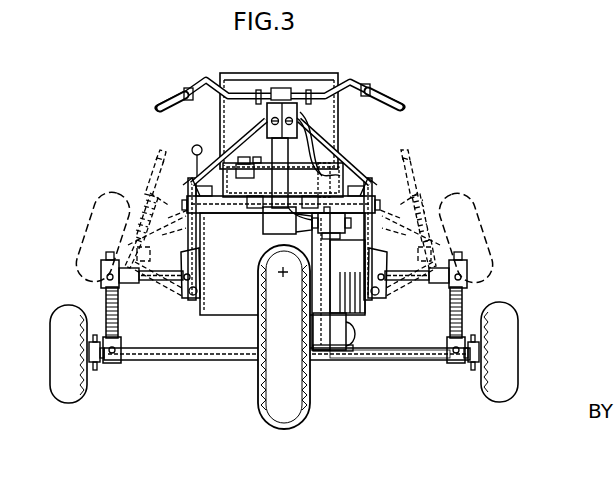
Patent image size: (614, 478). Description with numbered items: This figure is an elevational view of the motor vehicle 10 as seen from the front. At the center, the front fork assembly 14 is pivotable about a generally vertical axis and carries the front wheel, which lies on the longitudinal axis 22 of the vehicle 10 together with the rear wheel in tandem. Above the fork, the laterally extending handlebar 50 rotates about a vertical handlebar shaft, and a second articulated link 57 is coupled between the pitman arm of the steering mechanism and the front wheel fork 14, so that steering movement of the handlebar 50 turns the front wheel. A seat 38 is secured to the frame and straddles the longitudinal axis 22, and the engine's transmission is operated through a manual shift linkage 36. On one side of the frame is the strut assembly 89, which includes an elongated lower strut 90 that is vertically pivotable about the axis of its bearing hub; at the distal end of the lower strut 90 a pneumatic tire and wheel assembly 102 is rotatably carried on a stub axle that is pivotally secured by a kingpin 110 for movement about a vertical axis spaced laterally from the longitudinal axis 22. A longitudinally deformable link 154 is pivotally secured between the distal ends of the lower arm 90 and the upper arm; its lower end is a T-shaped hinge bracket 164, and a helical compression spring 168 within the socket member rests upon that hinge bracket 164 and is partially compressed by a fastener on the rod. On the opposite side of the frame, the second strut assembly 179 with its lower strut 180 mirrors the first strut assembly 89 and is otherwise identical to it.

The motor vehicle 10 is at (156, 139).
The front fork assembly 14 is at (265, 222).
The longitudinal axis 22 is at (278, 274).
The manual shift linkage 36 is at (196, 144).
The seat 38 is at (323, 72).
The handlebar 50 is at (357, 80).
The second articulated link 57 is at (340, 218).
The strut assembly 89 is at (379, 368).
The lower strut 90 is at (418, 362).
The pneumatic tire and wheel assembly 102 is at (470, 201).
The kingpin 110 is at (91, 372).
The longitudinally deformable link 154 is at (452, 313).
The T-shaped hinge bracket 164 is at (119, 338).
The helical compression spring 168 is at (118, 311).
The second strut assembly 179 is at (146, 366).
The lower strut 180 is at (205, 362).